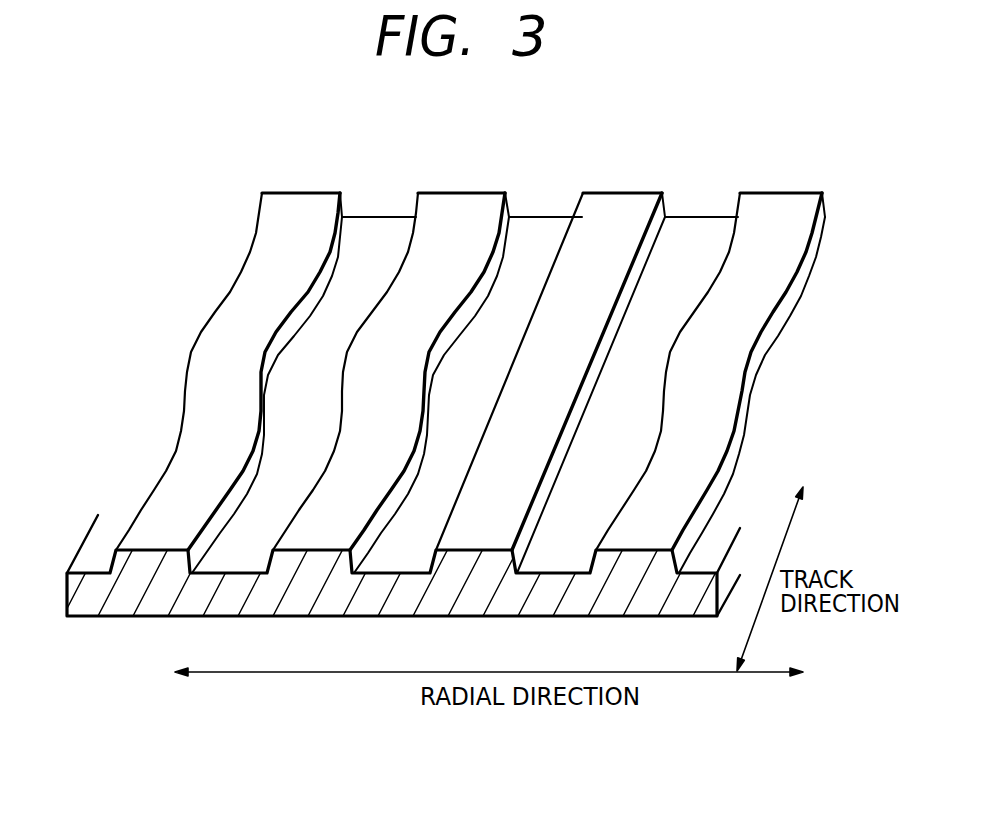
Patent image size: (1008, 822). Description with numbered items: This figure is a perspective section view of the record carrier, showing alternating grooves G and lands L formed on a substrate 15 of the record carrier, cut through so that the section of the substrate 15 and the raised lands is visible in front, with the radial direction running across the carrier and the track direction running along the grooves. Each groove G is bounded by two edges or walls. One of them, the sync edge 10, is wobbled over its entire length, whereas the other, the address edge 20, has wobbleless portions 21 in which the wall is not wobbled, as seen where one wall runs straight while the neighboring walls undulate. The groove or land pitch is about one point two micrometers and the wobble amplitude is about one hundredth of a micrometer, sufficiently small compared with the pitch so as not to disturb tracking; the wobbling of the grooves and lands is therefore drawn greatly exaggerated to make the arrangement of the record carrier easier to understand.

The sync edge 10 is at (262, 193).
The substrate 15 is at (122, 617).
The address edge 20 is at (343, 190).
The wobbleless portion 21 is at (327, 245).